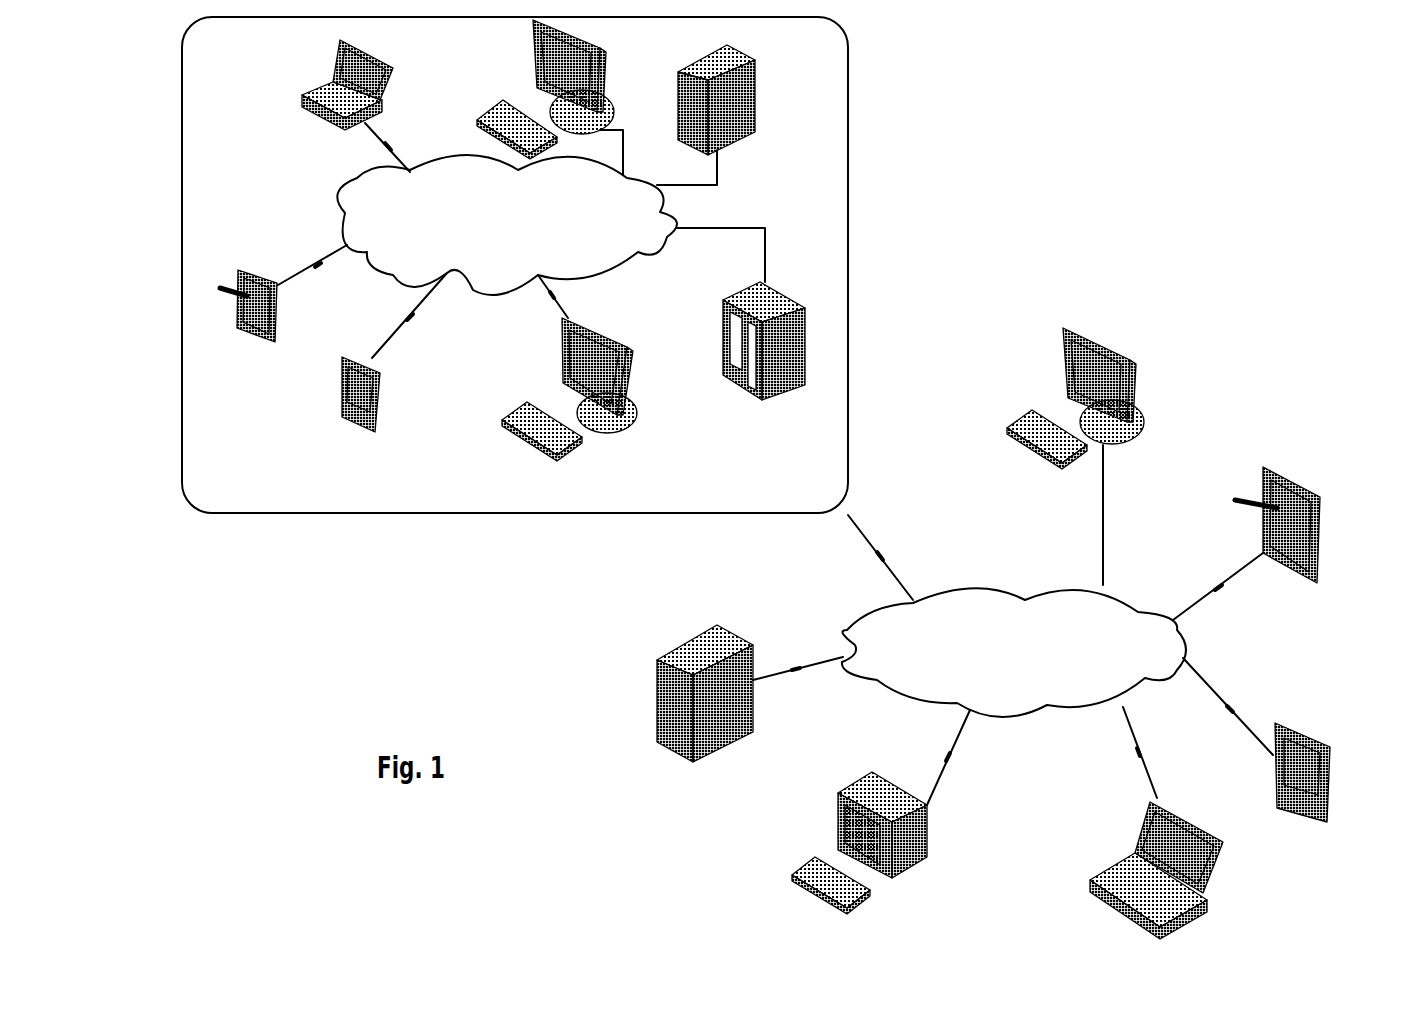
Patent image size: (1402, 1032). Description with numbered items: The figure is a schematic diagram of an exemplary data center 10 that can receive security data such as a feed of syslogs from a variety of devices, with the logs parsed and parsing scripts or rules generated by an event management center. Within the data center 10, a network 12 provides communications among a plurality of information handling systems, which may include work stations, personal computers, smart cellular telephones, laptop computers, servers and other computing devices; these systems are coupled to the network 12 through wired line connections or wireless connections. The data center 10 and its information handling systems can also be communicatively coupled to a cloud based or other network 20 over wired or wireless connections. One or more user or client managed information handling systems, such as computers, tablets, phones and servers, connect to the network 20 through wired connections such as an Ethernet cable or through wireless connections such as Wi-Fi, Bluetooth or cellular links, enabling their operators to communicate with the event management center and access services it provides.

The data center 10 is at (910, 127).
The network 12 is at (503, 297).
The network 20 is at (1044, 716).